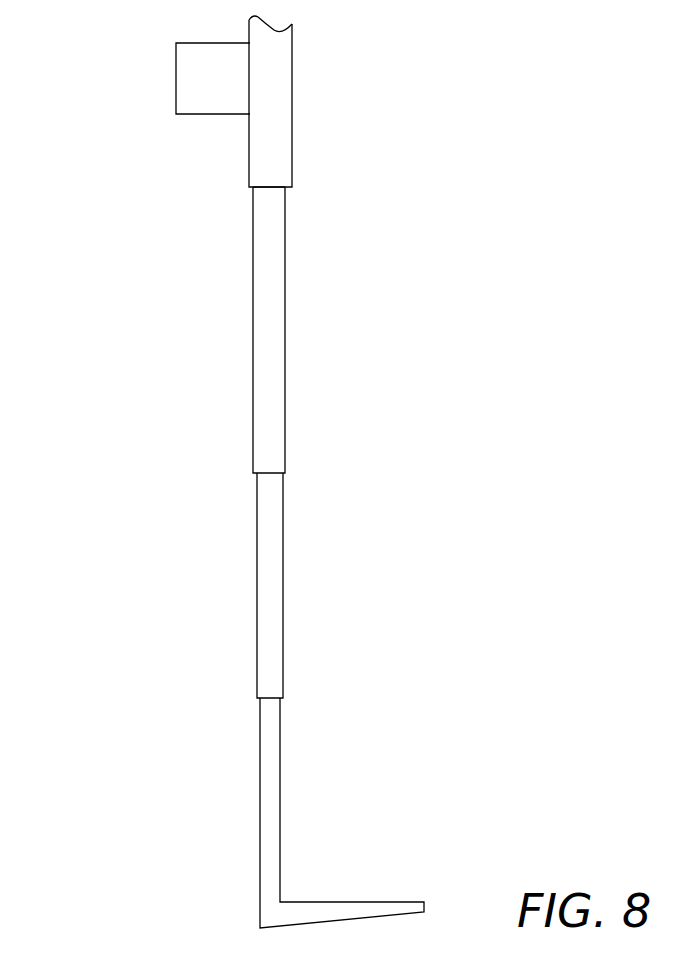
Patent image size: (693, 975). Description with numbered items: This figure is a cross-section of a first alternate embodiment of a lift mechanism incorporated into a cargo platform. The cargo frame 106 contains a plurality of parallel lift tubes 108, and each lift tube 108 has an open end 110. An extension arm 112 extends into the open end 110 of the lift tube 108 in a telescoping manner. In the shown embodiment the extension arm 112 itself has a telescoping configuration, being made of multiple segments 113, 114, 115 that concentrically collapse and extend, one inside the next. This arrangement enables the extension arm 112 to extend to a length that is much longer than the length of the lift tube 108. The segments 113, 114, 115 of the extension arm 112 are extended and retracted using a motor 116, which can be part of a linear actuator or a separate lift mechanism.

The cargo frame 106 is at (160, 33).
The lift tube 108 is at (268, 150).
The open end 110 is at (270, 187).
The extension arm 112 is at (290, 324).
The segment 113 is at (265, 355).
The segment 114 is at (267, 532).
The segment 115 is at (272, 770).
The motor 116 is at (205, 80).